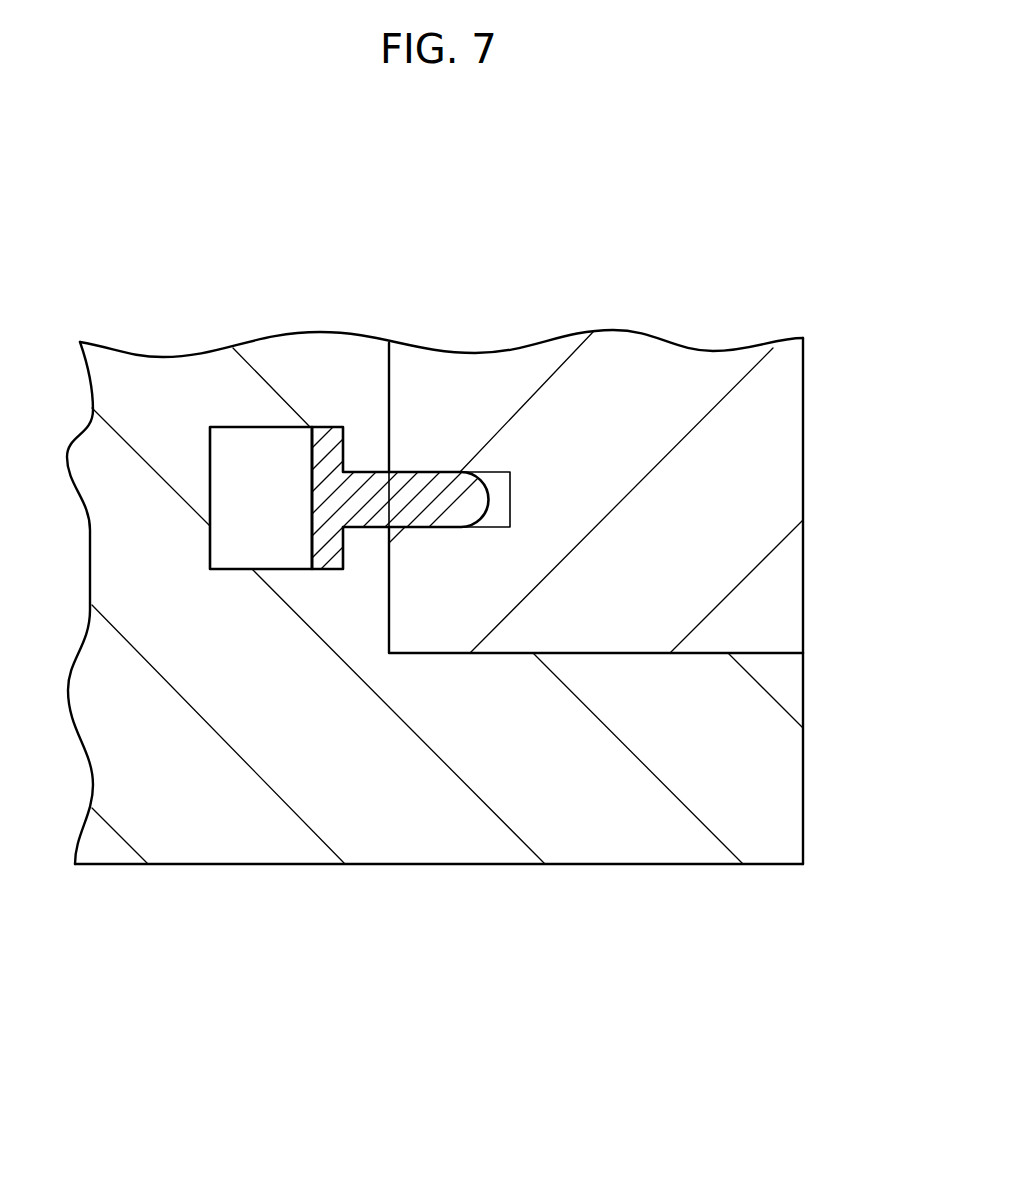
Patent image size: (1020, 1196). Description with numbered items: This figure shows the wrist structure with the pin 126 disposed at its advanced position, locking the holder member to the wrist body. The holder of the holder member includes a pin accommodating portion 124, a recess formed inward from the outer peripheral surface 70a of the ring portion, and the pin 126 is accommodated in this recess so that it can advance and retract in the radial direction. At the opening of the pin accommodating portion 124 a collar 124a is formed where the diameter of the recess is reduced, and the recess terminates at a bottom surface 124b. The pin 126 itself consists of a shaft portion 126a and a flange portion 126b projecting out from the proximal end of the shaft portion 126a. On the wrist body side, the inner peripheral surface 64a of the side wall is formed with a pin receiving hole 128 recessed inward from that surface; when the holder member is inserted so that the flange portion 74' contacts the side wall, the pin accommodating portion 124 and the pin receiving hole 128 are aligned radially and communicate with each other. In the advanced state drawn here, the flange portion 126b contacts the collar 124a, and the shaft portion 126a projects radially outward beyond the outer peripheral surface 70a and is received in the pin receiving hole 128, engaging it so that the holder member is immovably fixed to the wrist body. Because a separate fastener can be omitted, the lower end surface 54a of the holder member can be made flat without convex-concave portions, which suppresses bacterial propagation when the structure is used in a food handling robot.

The lower end surface 54a is at (500, 865).
The inner peripheral surface 64a is at (387, 622).
The outer peripheral surface 70a is at (388, 633).
The flange portion 74' is at (668, 758).
The pin accommodating portion 124 is at (243, 570).
The collar 124a is at (355, 543).
The bottom surface 124b is at (210, 482).
The pin 126 is at (438, 254).
The shaft portion 126a is at (431, 483).
The flange portion 126b is at (327, 443).
The pin receiving hole 128 is at (501, 522).